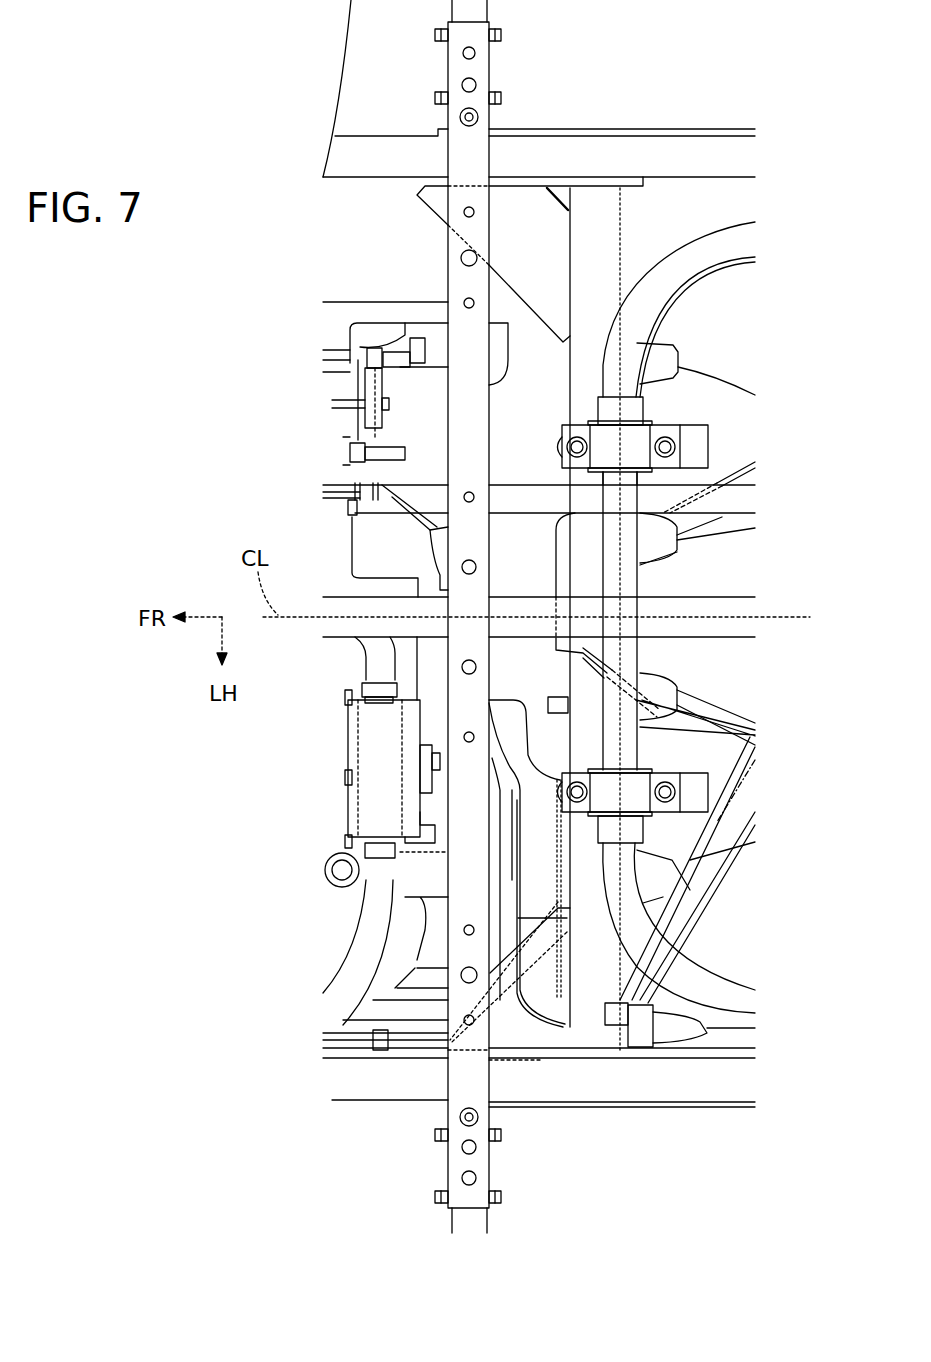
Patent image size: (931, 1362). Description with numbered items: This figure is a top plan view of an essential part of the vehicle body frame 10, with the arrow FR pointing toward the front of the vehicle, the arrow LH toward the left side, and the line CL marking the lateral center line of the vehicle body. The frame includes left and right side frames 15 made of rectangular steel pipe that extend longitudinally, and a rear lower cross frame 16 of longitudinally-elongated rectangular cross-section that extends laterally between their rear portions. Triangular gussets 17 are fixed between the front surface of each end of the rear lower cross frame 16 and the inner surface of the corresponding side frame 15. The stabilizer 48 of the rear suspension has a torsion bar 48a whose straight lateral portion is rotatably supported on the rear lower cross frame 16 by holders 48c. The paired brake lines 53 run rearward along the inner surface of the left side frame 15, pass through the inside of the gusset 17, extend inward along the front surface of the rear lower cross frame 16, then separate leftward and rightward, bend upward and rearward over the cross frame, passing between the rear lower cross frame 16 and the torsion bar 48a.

The vehicle body frame 10 is at (404, 122).
The side frame 15 is at (371, 150).
The rear lower cross frame 16 is at (610, 225).
The gusset 17 is at (543, 312).
The stabilizer 48 is at (711, 630).
The torsion bar 48a is at (692, 280).
The holder 48c is at (637, 441).
The brake line 53 is at (650, 712).